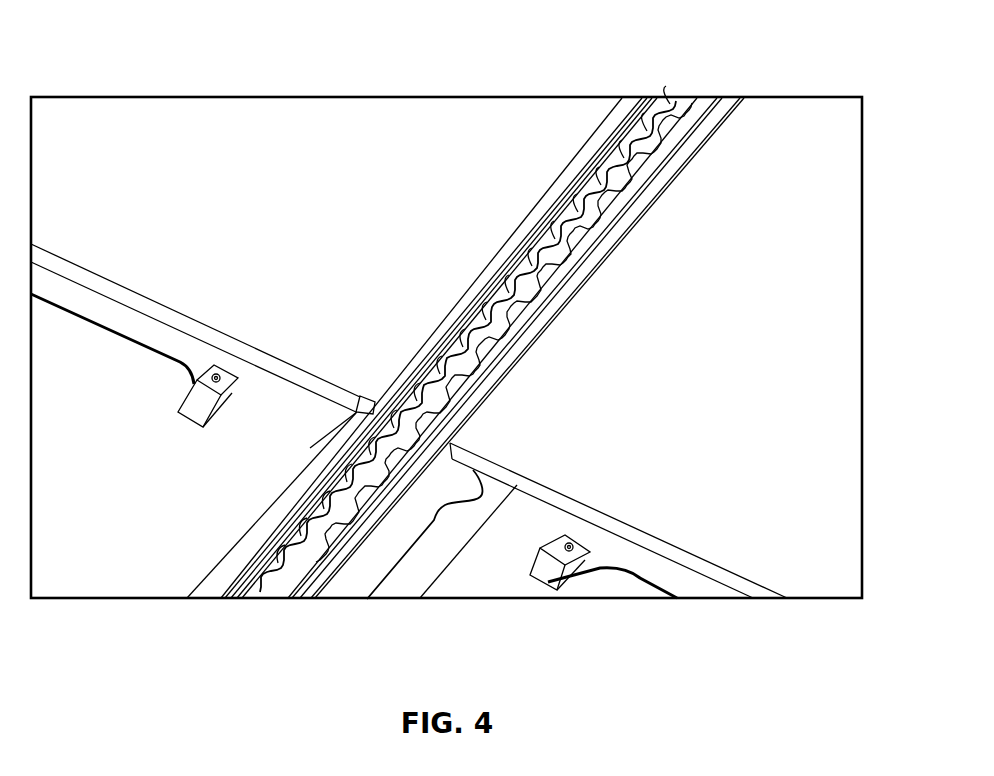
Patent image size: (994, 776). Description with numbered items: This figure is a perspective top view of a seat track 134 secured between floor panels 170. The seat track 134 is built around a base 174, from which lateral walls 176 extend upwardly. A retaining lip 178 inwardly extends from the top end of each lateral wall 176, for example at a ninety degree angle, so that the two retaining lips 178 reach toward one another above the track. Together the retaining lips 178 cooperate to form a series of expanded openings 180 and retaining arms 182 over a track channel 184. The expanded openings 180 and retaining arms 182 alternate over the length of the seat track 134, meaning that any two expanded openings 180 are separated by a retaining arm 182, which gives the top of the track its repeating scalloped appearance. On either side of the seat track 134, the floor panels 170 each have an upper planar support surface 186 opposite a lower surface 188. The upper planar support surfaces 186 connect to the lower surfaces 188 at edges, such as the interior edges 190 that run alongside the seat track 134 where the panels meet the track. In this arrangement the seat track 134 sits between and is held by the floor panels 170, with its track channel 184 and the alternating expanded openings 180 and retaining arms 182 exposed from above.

The seat track 134 is at (511, 283).
The floor panels 170 is at (453, 112).
The base 174 is at (440, 555).
The lateral walls 176 is at (337, 466).
The retaining lip 178 is at (248, 582).
The expanded openings 180 is at (278, 570).
The retaining arms 182 is at (313, 503).
The track channel 184 is at (682, 101).
The upper planar support surfaces 186 is at (528, 126).
The lower surfaces 188 is at (277, 378).
The interior edges 190 is at (621, 118).